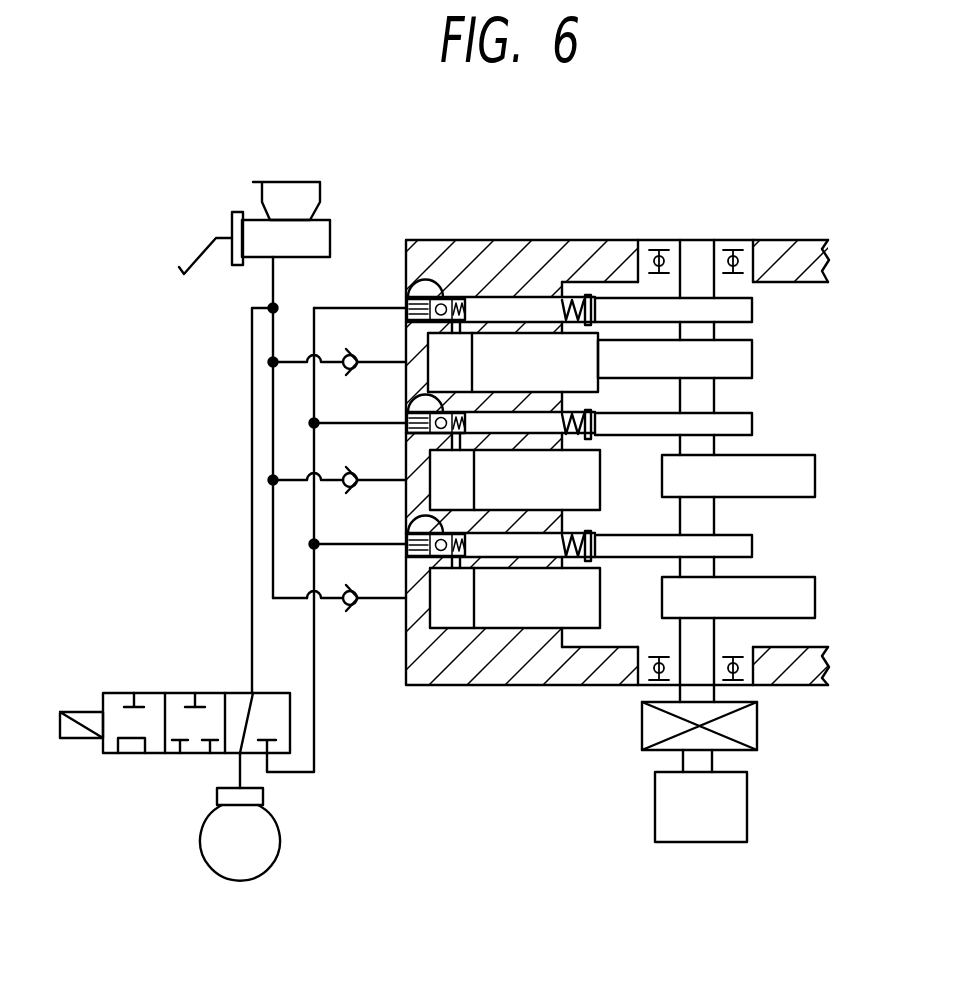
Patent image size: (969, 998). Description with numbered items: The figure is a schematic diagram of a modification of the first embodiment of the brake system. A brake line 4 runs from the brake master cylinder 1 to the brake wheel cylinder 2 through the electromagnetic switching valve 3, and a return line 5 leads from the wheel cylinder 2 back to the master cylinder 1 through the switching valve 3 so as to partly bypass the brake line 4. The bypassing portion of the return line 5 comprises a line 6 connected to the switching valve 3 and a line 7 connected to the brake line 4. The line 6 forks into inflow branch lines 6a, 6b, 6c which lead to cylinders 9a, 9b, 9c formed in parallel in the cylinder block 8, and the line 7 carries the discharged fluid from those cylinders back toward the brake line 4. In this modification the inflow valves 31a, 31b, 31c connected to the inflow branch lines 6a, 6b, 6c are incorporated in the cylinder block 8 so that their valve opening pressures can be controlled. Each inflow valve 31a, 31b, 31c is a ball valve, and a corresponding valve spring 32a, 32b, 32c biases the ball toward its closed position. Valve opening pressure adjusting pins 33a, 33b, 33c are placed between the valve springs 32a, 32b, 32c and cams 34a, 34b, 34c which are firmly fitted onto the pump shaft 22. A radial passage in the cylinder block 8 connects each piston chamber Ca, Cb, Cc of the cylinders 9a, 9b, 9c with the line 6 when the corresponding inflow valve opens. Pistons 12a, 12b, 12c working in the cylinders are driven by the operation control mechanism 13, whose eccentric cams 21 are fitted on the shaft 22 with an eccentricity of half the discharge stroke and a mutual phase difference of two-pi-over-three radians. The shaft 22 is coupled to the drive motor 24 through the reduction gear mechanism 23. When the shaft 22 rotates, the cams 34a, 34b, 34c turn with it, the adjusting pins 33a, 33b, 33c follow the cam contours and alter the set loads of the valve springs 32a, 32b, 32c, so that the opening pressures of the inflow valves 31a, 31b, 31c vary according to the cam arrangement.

The brake master cylinder 1 is at (325, 238).
The brake wheel cylinder 2 is at (262, 795).
The electromagnetic switching valve 3 is at (147, 693).
The brake line 4 is at (252, 479).
The return line 5 is at (314, 630).
The line 6 is at (315, 727).
The inflow branch line 6a is at (373, 308).
The inflow branch line 6b is at (347, 425).
The inflow branch line 6c is at (347, 541).
The line 7 is at (273, 282).
The cylinder block 8 is at (615, 258).
The cylinder 9a is at (430, 378).
The cylinder 9b is at (430, 462).
The cylinder 9c is at (430, 582).
The piston 12a is at (497, 350).
The piston 12b is at (576, 471).
The piston 12c is at (576, 588).
The operation control mechanism 13 is at (778, 227).
The eccentric cam 21 is at (742, 362).
The pump shaft 22 is at (698, 258).
The reduction gear mechanism 23 is at (757, 726).
The drive motor 24 is at (745, 797).
The inflow valve 31a is at (406, 327).
The inflow valve 31b is at (406, 405).
The inflow valve 31c is at (406, 522).
The valve spring 32a is at (406, 305).
The valve spring 32b is at (406, 390).
The valve spring 32c is at (406, 508).
The valve opening pressure adjusting pin 33a is at (540, 310).
The valve opening pressure adjusting pin 33b is at (562, 402).
The valve opening pressure adjusting pin 33c is at (562, 522).
The cam 34a is at (744, 311).
The cam 34b is at (744, 426).
The cam 34c is at (744, 547).